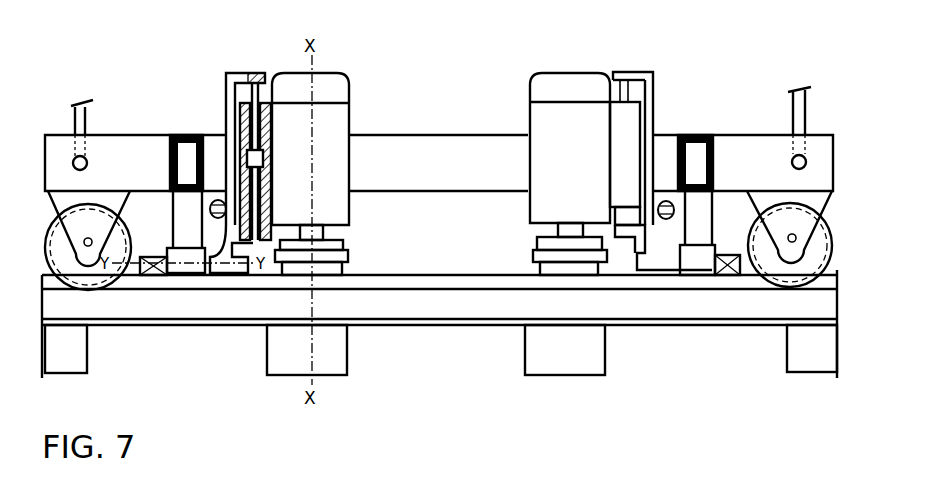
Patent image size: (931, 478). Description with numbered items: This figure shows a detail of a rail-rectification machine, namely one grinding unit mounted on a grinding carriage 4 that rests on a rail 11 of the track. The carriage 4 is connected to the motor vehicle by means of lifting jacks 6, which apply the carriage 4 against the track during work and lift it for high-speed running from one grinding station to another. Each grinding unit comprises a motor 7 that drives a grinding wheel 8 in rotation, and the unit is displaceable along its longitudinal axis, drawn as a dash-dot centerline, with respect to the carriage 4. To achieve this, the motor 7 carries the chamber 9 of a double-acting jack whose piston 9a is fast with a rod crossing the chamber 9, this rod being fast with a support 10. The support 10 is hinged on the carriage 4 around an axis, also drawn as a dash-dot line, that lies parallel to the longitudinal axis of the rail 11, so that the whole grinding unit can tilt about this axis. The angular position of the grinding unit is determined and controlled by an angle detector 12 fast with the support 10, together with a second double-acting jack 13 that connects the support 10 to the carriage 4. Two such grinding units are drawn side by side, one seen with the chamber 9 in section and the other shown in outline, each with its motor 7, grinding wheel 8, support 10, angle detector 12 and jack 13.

The grinding carriage 4 is at (145, 162).
The lifting jack 6 is at (78, 125).
The motor 7 is at (330, 121).
The grinding wheel 8 is at (330, 271).
The chamber of double-acting jack 9 is at (262, 134).
The piston 9a is at (263, 159).
The support 10 is at (232, 73).
The rail 11 is at (426, 300).
The angle detector 12 is at (148, 278).
The double-acting jack 13 is at (221, 198).